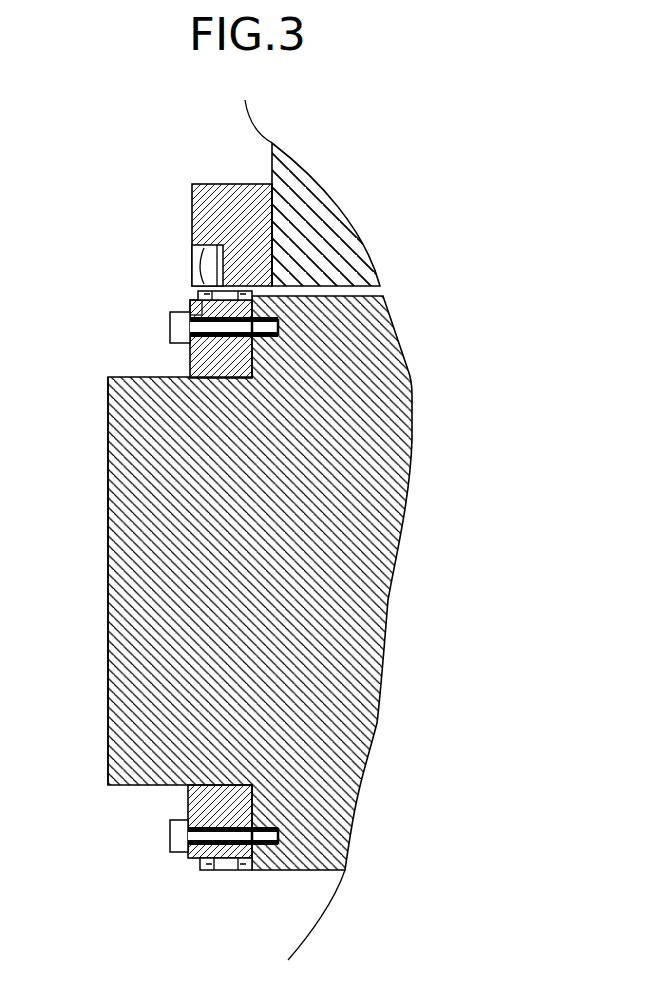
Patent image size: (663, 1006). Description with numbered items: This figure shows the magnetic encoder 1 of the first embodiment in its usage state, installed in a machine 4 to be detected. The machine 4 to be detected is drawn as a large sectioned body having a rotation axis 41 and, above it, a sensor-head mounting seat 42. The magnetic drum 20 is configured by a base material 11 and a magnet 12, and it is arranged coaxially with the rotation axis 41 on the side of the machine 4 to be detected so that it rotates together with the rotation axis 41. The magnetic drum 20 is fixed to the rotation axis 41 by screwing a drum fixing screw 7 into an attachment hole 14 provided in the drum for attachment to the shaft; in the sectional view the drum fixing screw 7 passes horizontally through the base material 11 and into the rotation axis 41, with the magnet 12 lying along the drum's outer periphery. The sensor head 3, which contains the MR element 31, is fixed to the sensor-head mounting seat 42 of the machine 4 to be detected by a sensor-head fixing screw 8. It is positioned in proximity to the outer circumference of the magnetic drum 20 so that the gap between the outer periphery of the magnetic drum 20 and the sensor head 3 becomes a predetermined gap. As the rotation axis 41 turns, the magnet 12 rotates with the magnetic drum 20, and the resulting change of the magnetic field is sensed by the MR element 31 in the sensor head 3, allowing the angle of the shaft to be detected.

The magnetic encoder 1 is at (137, 179).
The sensor head 3 is at (230, 183).
The MR element 31 is at (245, 267).
The machine to be detected 4 is at (398, 428).
The rotation axis 41 is at (128, 742).
The sensor-head mounting seat 42 is at (343, 245).
The drum fixing screw 7 is at (175, 338).
The sensor-head fixing screw 8 is at (200, 262).
The base material 11 is at (188, 367).
The magnet 12 is at (197, 300).
The attachment hole 14 is at (188, 310).
The magnetic drum 20 is at (190, 798).